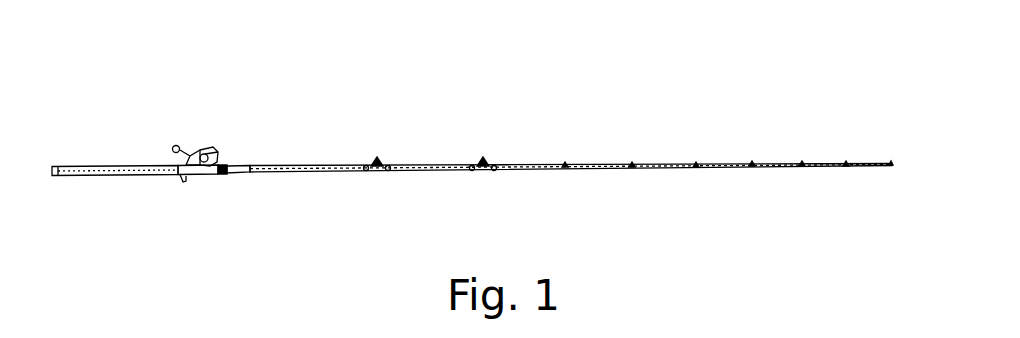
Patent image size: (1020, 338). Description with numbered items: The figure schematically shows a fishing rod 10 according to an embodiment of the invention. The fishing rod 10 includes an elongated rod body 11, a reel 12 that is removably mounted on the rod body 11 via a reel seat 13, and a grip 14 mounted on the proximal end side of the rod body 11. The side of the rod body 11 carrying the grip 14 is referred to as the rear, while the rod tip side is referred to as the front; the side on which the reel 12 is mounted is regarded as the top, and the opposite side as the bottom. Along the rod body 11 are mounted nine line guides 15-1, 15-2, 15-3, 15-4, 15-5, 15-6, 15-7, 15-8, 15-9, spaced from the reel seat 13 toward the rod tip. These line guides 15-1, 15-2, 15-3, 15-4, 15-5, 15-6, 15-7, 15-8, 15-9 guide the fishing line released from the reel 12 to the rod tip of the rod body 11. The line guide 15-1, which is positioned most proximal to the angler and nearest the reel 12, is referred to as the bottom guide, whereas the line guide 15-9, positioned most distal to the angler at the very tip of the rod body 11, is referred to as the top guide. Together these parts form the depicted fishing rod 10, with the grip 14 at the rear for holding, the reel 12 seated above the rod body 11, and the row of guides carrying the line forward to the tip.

The fishing rod 10 is at (321, 91).
The rod body 11 is at (310, 173).
The reel 12 is at (207, 152).
The reel seat 13 is at (185, 176).
The grip 14 is at (110, 171).
The line guide (bottom guide) 15-1 is at (377, 157).
The line guide 15-2 is at (483, 157).
The line guide 15-3 is at (565, 162).
The line guide 15-4 is at (632, 162).
The line guide 15-5 is at (696, 162).
The line guide 15-6 is at (752, 161).
The line guide 15-7 is at (802, 161).
The line guide 15-8 is at (846, 161).
The line guide (top guide) 15-9 is at (891, 161).